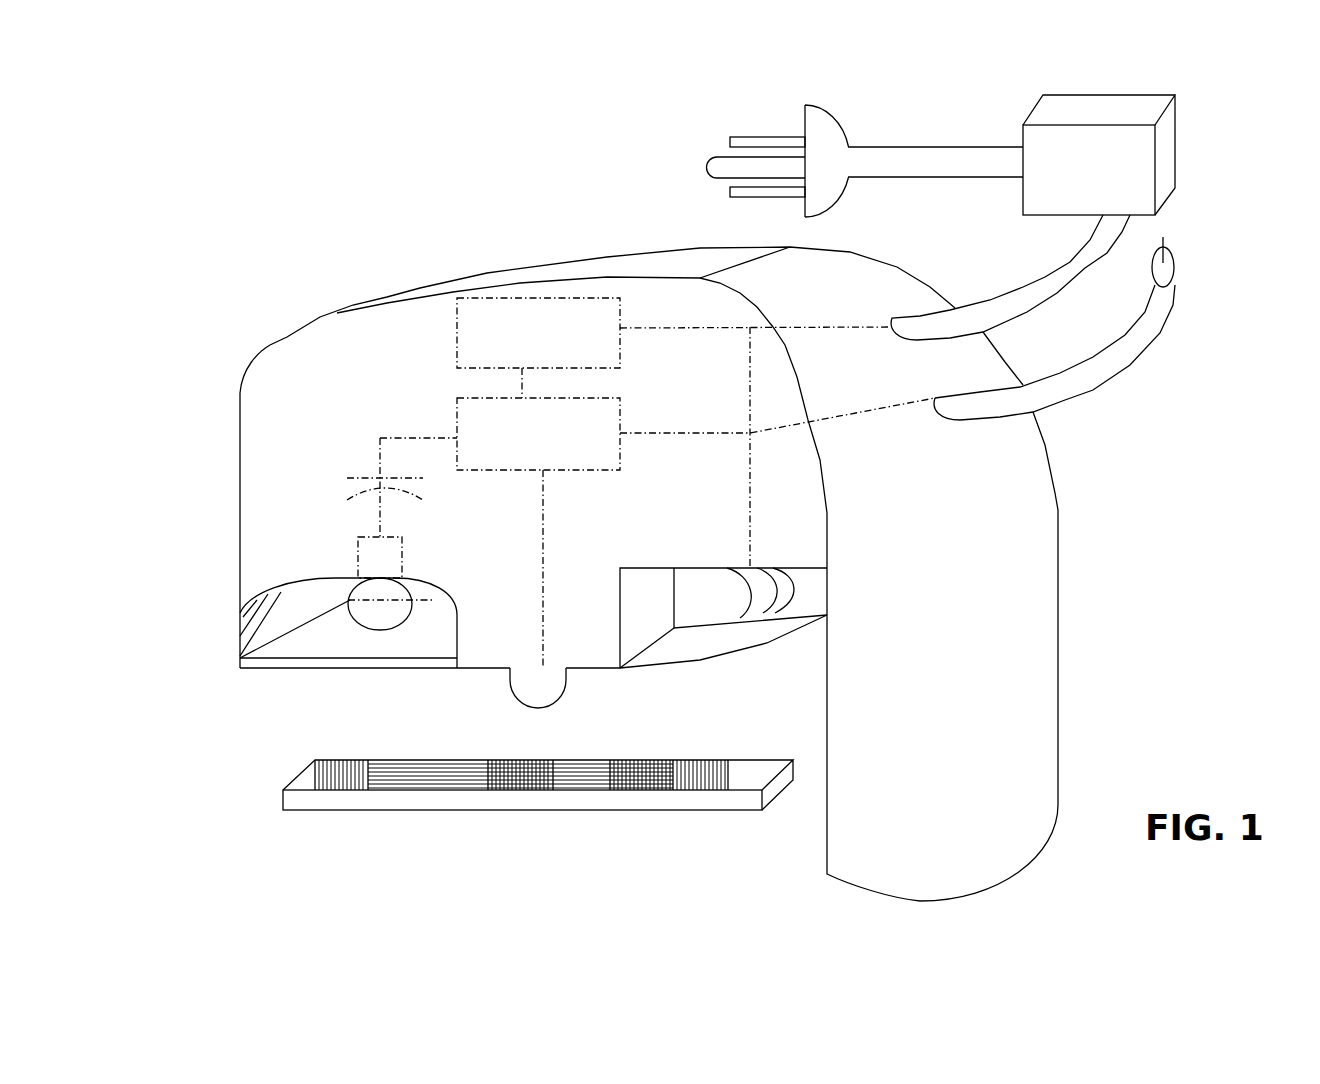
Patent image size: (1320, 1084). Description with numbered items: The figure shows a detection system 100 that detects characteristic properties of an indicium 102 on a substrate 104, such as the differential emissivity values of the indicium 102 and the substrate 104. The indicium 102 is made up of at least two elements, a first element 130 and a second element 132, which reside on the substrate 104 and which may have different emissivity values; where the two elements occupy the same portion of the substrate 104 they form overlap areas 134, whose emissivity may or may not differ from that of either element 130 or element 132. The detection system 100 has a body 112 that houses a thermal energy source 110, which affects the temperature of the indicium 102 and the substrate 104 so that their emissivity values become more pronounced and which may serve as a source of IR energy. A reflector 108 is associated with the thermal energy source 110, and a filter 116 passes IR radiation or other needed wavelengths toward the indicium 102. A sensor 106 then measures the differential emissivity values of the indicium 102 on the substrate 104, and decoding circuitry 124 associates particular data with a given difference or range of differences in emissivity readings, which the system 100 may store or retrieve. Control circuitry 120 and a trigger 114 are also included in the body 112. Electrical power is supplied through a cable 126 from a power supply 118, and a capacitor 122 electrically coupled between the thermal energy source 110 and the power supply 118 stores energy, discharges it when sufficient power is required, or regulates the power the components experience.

The detection system 100 is at (776, 105).
The indicium 102 is at (327, 782).
The substrate 104 is at (327, 800).
The sensor 106 is at (543, 688).
The reflector 108 is at (293, 608).
The thermal energy source 110 is at (378, 610).
The body 112 is at (370, 368).
The trigger 114 is at (762, 608).
The filter 116 is at (412, 642).
The power supply 118 is at (1110, 157).
The control circuitry 120 is at (525, 413).
The capacitor 122 is at (380, 478).
The decoding circuitry 124 is at (577, 318).
The cable 126 is at (1120, 348).
The element 130 is at (707, 780).
The element 132 is at (597, 780).
The overlap area 134 is at (513, 780).